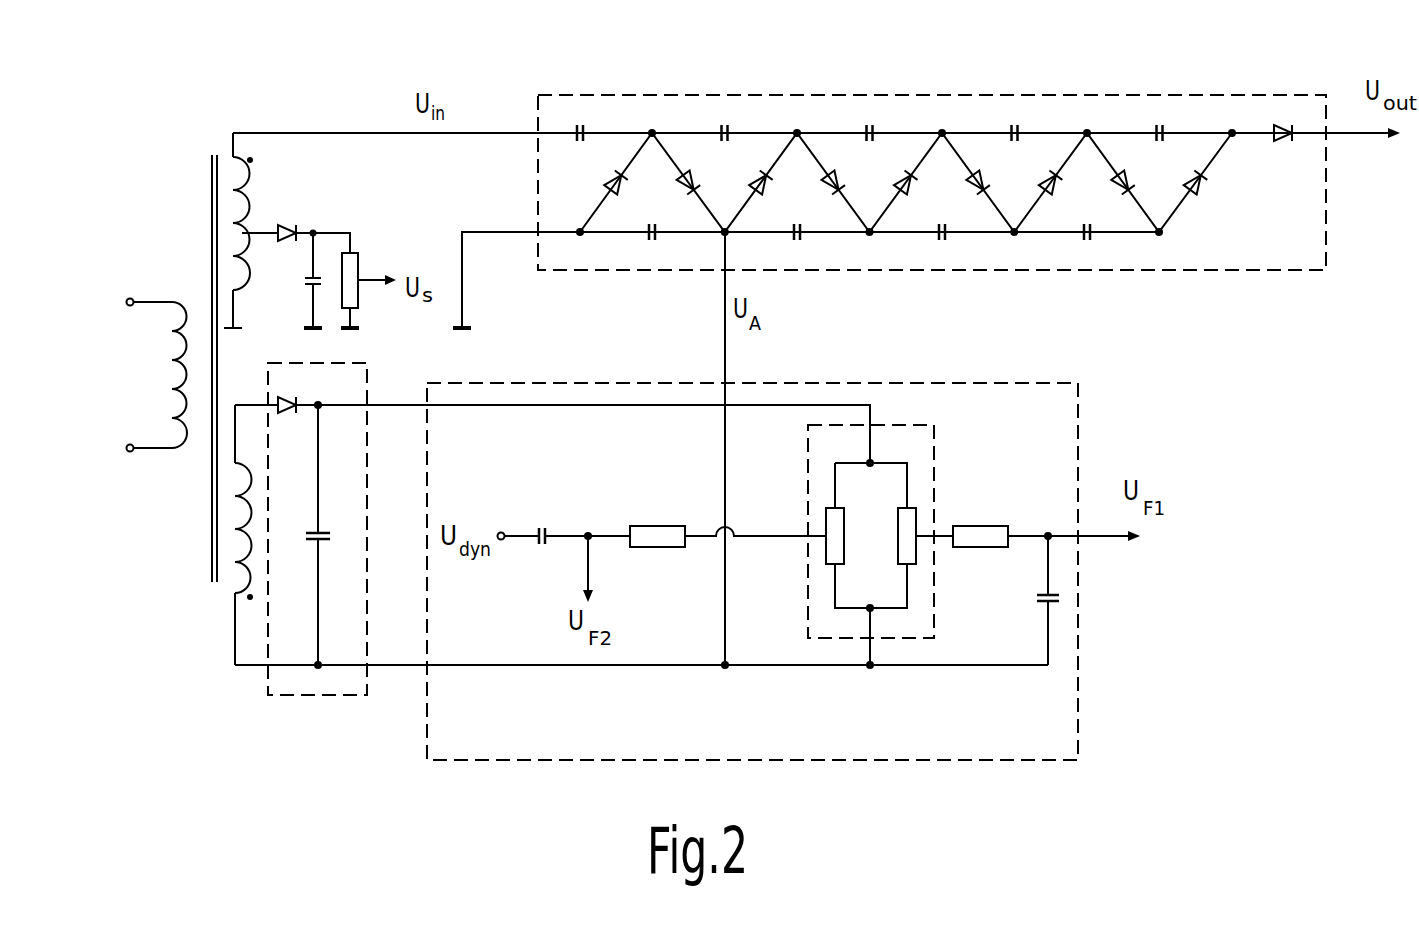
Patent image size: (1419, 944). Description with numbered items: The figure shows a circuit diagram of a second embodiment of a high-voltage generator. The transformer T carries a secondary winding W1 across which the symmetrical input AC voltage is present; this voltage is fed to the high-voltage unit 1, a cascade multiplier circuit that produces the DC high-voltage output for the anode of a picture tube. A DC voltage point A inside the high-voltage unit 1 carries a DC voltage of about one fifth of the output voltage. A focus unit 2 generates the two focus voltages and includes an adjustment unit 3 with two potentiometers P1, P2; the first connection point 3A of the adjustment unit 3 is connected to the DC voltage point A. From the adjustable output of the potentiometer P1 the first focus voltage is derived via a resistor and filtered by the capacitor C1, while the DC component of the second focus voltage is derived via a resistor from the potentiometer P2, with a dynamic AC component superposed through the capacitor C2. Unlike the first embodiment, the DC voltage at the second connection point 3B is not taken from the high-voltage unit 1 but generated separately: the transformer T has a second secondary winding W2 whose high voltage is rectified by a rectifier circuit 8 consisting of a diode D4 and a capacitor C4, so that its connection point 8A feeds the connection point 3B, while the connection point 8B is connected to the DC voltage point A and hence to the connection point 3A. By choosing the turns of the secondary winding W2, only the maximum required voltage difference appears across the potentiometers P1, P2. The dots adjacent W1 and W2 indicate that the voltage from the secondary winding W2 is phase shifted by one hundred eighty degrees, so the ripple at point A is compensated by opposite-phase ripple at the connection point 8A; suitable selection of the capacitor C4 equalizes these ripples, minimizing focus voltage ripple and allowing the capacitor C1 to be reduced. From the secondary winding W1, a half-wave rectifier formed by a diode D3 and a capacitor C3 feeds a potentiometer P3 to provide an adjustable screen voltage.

The high-voltage unit 1 is at (1137, 93).
The focus unit 2 is at (993, 383).
The adjustment unit 3 is at (901, 532).
The first connection point 3A is at (872, 609).
The second connection point 3B is at (872, 462).
The rectifier circuit 8 is at (305, 698).
The connection point 8A is at (320, 404).
The connection point 8B is at (321, 663).
The DC voltage point A is at (722, 237).
The transformer T is at (186, 492).
The secondary winding W1 is at (238, 170).
The second secondary winding W2 is at (240, 545).
The diode D3 is at (289, 224).
The diode D4 is at (291, 413).
The capacitor C1 is at (1058, 598).
The capacitor C2 is at (542, 550).
The capacitor C3 is at (310, 287).
The capacitor C4 is at (321, 529).
The potentiometer P1 is at (898, 540).
The potentiometer P2 is at (847, 540).
The potentiometer P3 is at (358, 263).